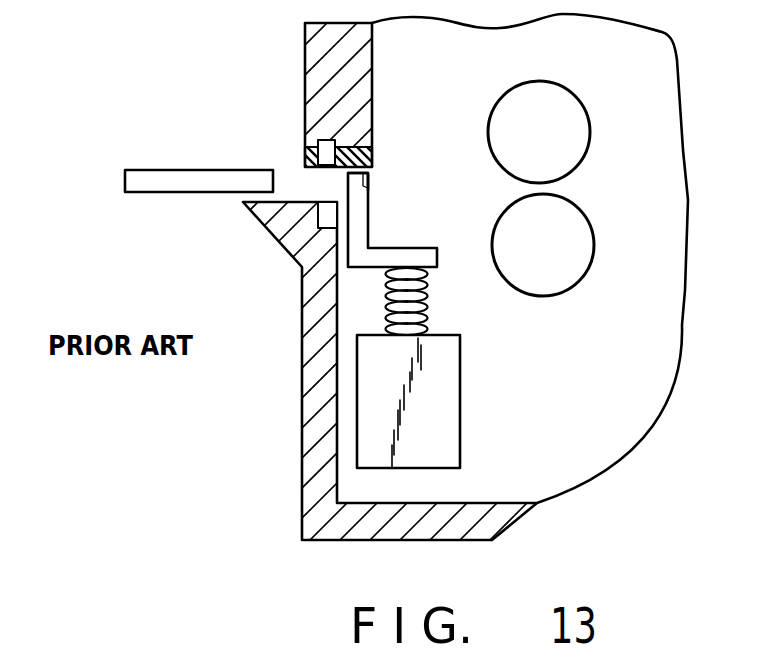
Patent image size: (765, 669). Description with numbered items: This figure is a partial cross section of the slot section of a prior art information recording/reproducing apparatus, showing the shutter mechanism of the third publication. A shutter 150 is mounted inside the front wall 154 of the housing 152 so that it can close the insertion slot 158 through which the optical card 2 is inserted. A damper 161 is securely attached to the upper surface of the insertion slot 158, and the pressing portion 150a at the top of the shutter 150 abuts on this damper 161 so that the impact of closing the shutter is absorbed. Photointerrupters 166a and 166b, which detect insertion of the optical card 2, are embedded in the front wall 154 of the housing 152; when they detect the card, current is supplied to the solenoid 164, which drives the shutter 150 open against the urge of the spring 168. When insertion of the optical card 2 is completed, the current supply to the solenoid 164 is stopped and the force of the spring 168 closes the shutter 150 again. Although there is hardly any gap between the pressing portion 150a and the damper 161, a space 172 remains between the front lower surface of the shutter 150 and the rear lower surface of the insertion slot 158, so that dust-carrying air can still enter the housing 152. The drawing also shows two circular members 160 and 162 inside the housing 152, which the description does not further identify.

The optical card 2 is at (172, 170).
The shutter 150 is at (368, 222).
The pressing portion 150a is at (368, 180).
The housing 152 is at (312, 427).
The front wall 154 is at (305, 40).
The insertion slot 158 is at (290, 162).
The roller 160 is at (569, 292).
The damper 161 is at (374, 157).
The roller 162 is at (576, 95).
The solenoid 164 is at (459, 383).
The photointerrupter 166a is at (310, 140).
The photointerrupter 166b is at (313, 225).
The spring 168 is at (430, 292).
The space 172 is at (330, 252).